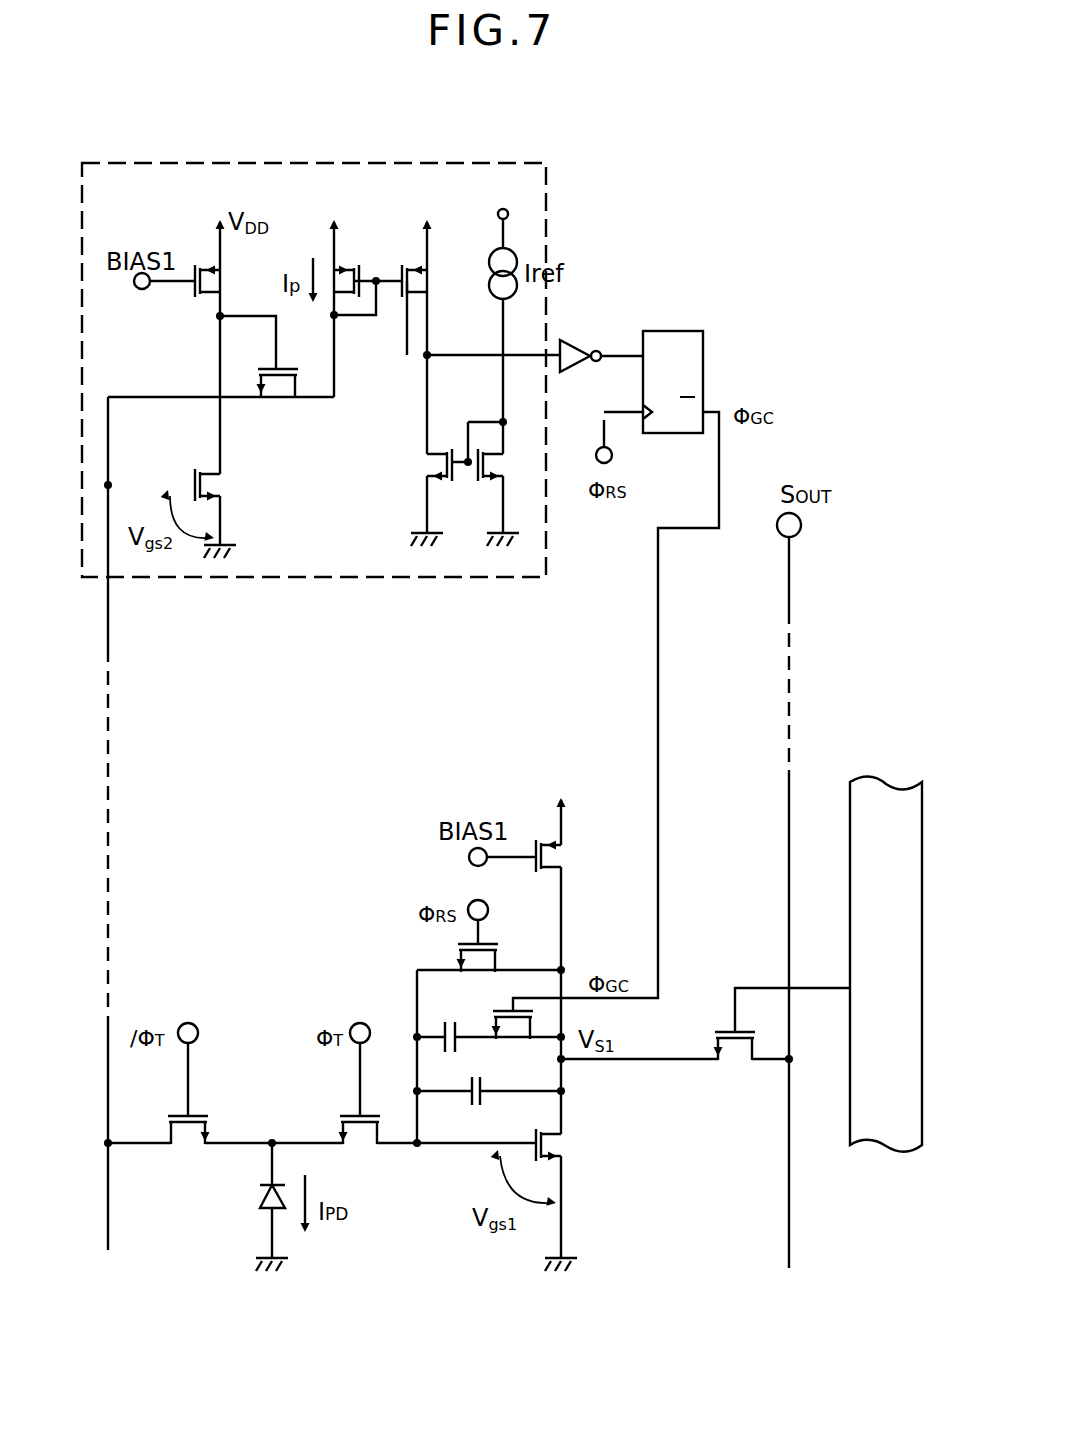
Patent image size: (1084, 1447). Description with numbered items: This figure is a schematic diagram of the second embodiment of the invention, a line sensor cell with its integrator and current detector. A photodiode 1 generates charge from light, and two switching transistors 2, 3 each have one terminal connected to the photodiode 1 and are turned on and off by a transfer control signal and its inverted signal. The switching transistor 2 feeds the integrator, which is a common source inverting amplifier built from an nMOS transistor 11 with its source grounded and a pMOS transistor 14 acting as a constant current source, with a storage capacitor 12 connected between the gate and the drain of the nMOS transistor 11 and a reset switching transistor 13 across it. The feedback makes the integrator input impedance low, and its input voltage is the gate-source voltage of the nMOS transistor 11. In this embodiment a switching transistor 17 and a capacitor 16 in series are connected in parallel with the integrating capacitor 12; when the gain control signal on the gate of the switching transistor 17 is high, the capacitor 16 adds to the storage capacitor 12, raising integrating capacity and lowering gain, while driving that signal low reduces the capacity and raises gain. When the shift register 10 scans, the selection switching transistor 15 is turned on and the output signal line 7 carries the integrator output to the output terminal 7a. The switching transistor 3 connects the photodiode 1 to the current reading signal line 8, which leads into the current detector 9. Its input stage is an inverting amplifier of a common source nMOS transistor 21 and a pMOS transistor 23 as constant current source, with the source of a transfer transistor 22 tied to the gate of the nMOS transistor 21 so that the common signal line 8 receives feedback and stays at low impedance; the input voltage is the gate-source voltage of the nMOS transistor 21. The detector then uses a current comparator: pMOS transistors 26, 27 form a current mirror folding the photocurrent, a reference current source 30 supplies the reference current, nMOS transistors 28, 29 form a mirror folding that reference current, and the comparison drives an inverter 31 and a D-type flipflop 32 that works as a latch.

The photodiode 1 is at (258, 1204).
The switching transistor 2 is at (362, 1146).
The switching transistor 3 is at (186, 1146).
The output signal line 7 is at (789, 792).
The output terminal 7a is at (802, 527).
The current reading signal line 8 is at (108, 930).
The current detector 9 is at (533, 163).
The shift register 10 is at (873, 1150).
The nMOS transistor 11 is at (568, 1142).
The storage capacitor 12 is at (468, 1102).
The reset switching transistor 13 is at (504, 962).
The pMOS transistor 14 is at (566, 858).
The selection switching transistor 15 is at (732, 1064).
The capacitor 16 is at (450, 1024).
The switching transistor 17 is at (512, 1040).
The nMOS transistor 21 is at (226, 488).
The transfer transistor 22 is at (276, 400).
The pMOS transistor 23 is at (190, 296).
The pMOS transistor 26 is at (348, 268).
The pMOS transistor 27 is at (432, 275).
The nMOS transistor 28 is at (420, 462).
The nMOS transistor 29 is at (498, 464).
The reference current source 30 is at (520, 258).
The inverter 31 is at (580, 346).
The D-type flipflop 32 is at (682, 331).